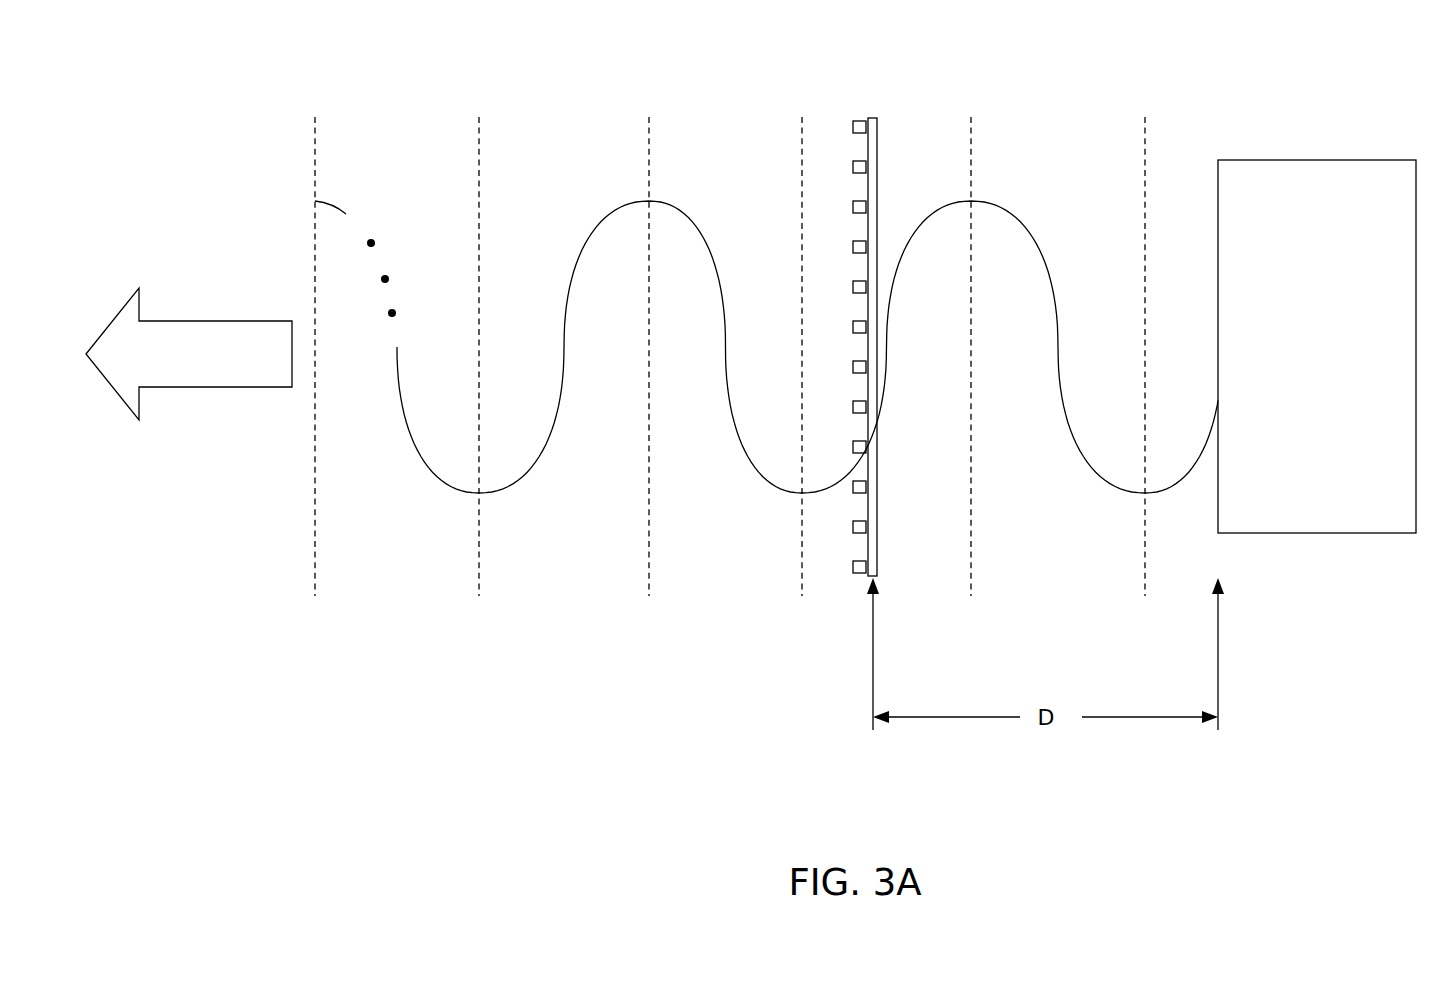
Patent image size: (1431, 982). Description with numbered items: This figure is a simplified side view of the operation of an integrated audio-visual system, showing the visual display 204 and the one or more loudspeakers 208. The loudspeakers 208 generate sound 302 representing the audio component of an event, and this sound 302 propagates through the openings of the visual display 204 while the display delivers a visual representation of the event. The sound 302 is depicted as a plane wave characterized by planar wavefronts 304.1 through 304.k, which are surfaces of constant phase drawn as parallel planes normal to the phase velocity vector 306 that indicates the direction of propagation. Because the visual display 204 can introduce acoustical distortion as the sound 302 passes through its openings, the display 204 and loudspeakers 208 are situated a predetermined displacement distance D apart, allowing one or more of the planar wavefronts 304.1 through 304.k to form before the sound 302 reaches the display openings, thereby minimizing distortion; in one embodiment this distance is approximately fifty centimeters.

The visual display 204 is at (873, 118).
The loudspeakers 208 is at (1310, 160).
The sound 302 is at (758, 472).
The planar wavefront 304.1 is at (1146, 341).
The planar wavefront 304.k is at (321, 344).
The phase velocity vector 306 is at (189, 354).